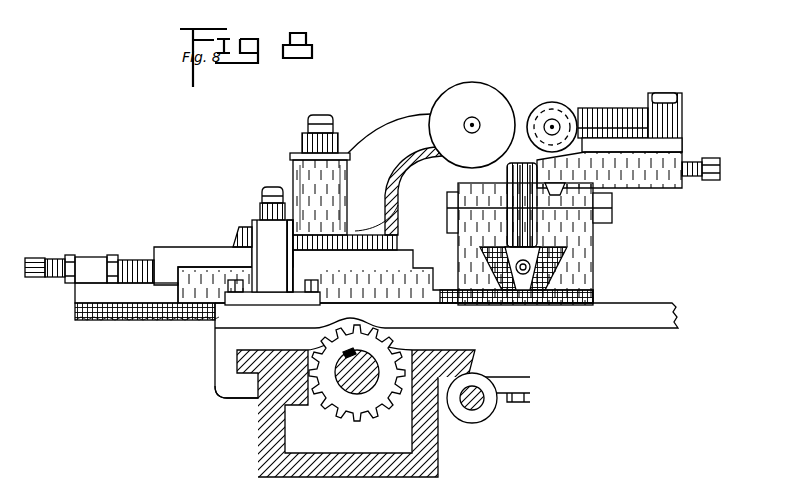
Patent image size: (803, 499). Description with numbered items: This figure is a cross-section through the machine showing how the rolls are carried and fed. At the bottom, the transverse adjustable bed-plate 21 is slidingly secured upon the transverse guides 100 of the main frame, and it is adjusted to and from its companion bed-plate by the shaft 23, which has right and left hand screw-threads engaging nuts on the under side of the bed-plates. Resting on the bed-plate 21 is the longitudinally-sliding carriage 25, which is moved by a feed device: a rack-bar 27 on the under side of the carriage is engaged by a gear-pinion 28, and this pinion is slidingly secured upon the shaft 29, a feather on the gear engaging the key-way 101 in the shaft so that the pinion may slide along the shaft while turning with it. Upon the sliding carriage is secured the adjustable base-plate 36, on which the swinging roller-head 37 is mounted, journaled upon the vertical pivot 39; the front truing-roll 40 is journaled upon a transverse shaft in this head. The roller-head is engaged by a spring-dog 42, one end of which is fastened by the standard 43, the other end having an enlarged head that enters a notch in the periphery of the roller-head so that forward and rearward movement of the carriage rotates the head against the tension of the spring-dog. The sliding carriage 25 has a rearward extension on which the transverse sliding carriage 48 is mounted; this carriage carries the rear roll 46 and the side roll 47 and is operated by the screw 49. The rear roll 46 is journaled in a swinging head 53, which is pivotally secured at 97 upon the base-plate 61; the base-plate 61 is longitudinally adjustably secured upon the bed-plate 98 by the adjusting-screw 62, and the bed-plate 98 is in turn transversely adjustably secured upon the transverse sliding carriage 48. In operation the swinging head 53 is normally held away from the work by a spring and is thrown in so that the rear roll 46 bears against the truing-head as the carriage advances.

The transverse adjustable bed-plate 21 is at (222, 338).
The shaft 23 is at (483, 404).
The longitudinally-sliding carriage 25 is at (80, 327).
The rack-bar 27 is at (68, 337).
The gear-pinion 28 is at (383, 393).
The shaft 29 is at (377, 363).
The adjustable base-plate 36 is at (194, 250).
The swinging roller-head 37 is at (396, 133).
The vertical pivot 39 is at (297, 152).
The front truing-roll 40 is at (472, 125).
The spring-dog 42 is at (237, 238).
The standard 43 is at (276, 302).
The rear roll 46 is at (566, 113).
The side roll 47 is at (512, 172).
The transverse sliding carriage 48 is at (590, 264).
The screw 49 is at (526, 270).
The swinging head 53 is at (623, 108).
The base-plate 61 is at (677, 145).
The adjusting-screw 62 is at (703, 177).
The pivot 97 is at (682, 118).
The bed-plate 98 is at (663, 183).
The transverse guide 100 is at (228, 398).
The key-way 101 is at (343, 356).